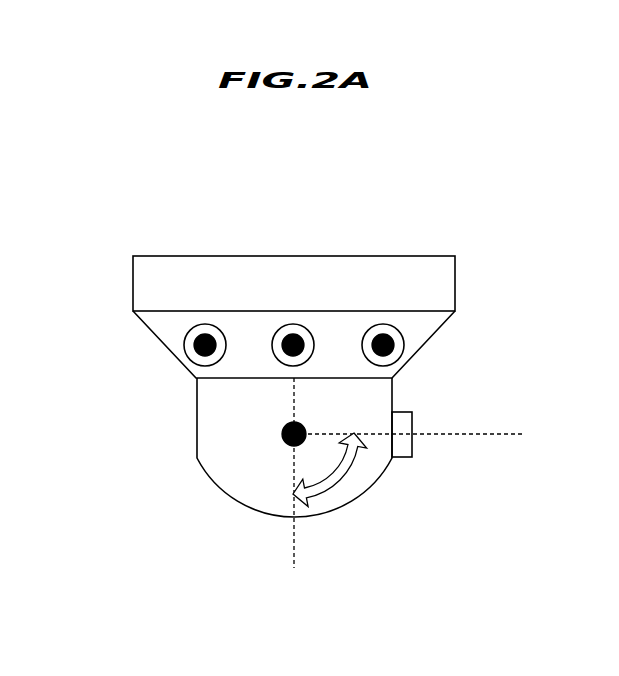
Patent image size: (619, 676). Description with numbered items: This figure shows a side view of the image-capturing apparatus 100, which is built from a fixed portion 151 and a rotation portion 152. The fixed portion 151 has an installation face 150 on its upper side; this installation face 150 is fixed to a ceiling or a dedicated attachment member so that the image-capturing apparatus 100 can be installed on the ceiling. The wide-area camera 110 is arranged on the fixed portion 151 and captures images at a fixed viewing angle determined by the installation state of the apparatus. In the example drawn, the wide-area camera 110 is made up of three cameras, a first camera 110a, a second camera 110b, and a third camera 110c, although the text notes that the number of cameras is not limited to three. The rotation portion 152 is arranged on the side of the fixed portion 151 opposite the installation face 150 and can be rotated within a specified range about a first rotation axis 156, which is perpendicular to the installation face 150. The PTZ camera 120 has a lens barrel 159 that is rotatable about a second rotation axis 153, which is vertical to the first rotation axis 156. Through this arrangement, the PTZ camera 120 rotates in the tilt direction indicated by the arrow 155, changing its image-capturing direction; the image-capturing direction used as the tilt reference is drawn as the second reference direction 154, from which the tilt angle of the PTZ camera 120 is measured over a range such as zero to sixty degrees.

The image-capturing apparatus 100 is at (313, 236).
The wide-area camera 110 is at (466, 340).
The first camera 110a is at (207, 324).
The second camera 110b is at (294, 324).
The third camera 110c is at (384, 324).
The PTZ camera 120 is at (414, 424).
The lens barrel 159 is at (402, 434).
The installation face 150 is at (210, 256).
The fixed portion 151 is at (116, 259).
The rotation portion 152 is at (116, 517).
The second rotation axis 153 is at (290, 448).
The second reference direction 154 is at (475, 436).
The arrow 155 is at (352, 487).
The first rotation axis 156 is at (294, 546).